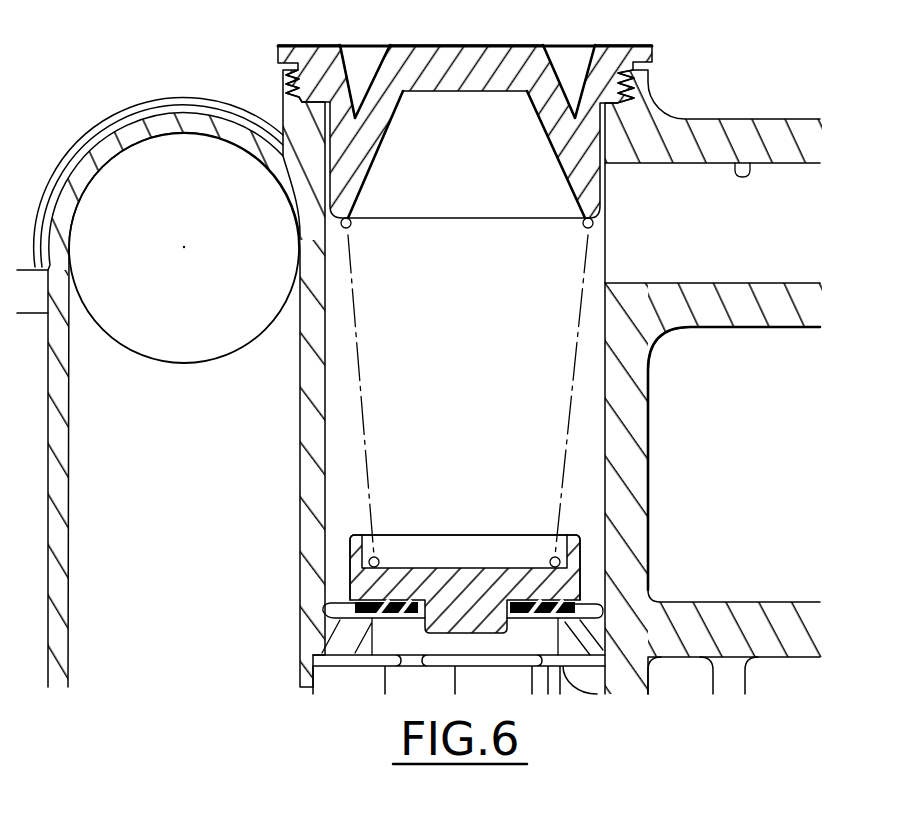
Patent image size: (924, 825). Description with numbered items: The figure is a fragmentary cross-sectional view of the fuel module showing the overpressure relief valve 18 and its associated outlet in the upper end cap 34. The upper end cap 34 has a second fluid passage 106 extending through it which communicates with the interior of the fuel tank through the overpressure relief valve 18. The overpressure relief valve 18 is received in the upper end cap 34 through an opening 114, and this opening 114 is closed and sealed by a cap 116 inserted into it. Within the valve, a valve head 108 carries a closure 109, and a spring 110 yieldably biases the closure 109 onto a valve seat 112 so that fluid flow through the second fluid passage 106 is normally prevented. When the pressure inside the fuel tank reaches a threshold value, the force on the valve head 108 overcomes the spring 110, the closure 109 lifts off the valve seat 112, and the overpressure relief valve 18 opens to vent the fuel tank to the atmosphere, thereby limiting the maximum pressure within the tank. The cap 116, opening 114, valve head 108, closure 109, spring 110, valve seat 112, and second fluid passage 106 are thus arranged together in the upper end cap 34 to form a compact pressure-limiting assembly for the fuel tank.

The upper end cap 34 is at (119, 113).
The opening 114 is at (325, 47).
The cap 116 is at (465, 50).
The second fluid passage 106 is at (739, 158).
The spring 110 is at (359, 364).
The valve head 108 is at (460, 577).
The overpressure relief valve 18 is at (346, 571).
The closure 109 is at (585, 605).
The valve seat 112 is at (330, 603).